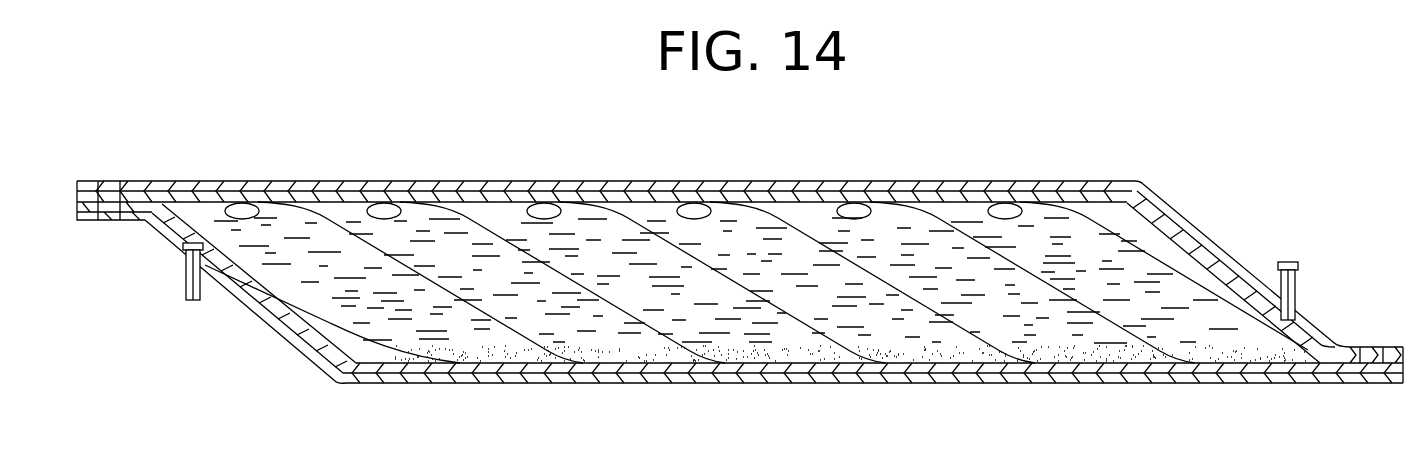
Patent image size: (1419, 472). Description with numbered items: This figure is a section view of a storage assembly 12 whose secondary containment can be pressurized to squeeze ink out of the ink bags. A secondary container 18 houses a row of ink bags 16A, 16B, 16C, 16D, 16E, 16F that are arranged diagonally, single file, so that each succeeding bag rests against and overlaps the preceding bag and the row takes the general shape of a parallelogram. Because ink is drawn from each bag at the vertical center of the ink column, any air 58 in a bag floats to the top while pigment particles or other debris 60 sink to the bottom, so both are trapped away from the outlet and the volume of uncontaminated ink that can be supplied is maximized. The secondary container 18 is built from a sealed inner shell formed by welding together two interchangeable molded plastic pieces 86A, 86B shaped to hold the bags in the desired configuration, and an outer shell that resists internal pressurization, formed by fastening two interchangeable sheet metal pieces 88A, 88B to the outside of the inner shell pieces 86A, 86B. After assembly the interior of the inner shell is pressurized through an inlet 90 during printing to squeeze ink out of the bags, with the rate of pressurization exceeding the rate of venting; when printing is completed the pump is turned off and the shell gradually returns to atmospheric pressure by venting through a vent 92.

The storage assembly 12 is at (203, 339).
The secondary container 18 is at (72, 183).
The air 58 is at (243, 208).
The debris 60 is at (500, 366).
The ink bag 16A is at (410, 362).
The ink bag 16B is at (572, 362).
The ink bag 16C is at (722, 364).
The ink bag 16D is at (875, 362).
The ink bag 16E is at (1025, 362).
The ink bag 16F is at (1180, 362).
The inner shell piece 86A is at (1012, 195).
The inner shell piece 86B is at (1287, 366).
The outer shell piece 88A is at (1083, 184).
The outer shell piece 88B is at (1348, 380).
The inlet 90 is at (185, 283).
The vent 92 is at (1298, 280).